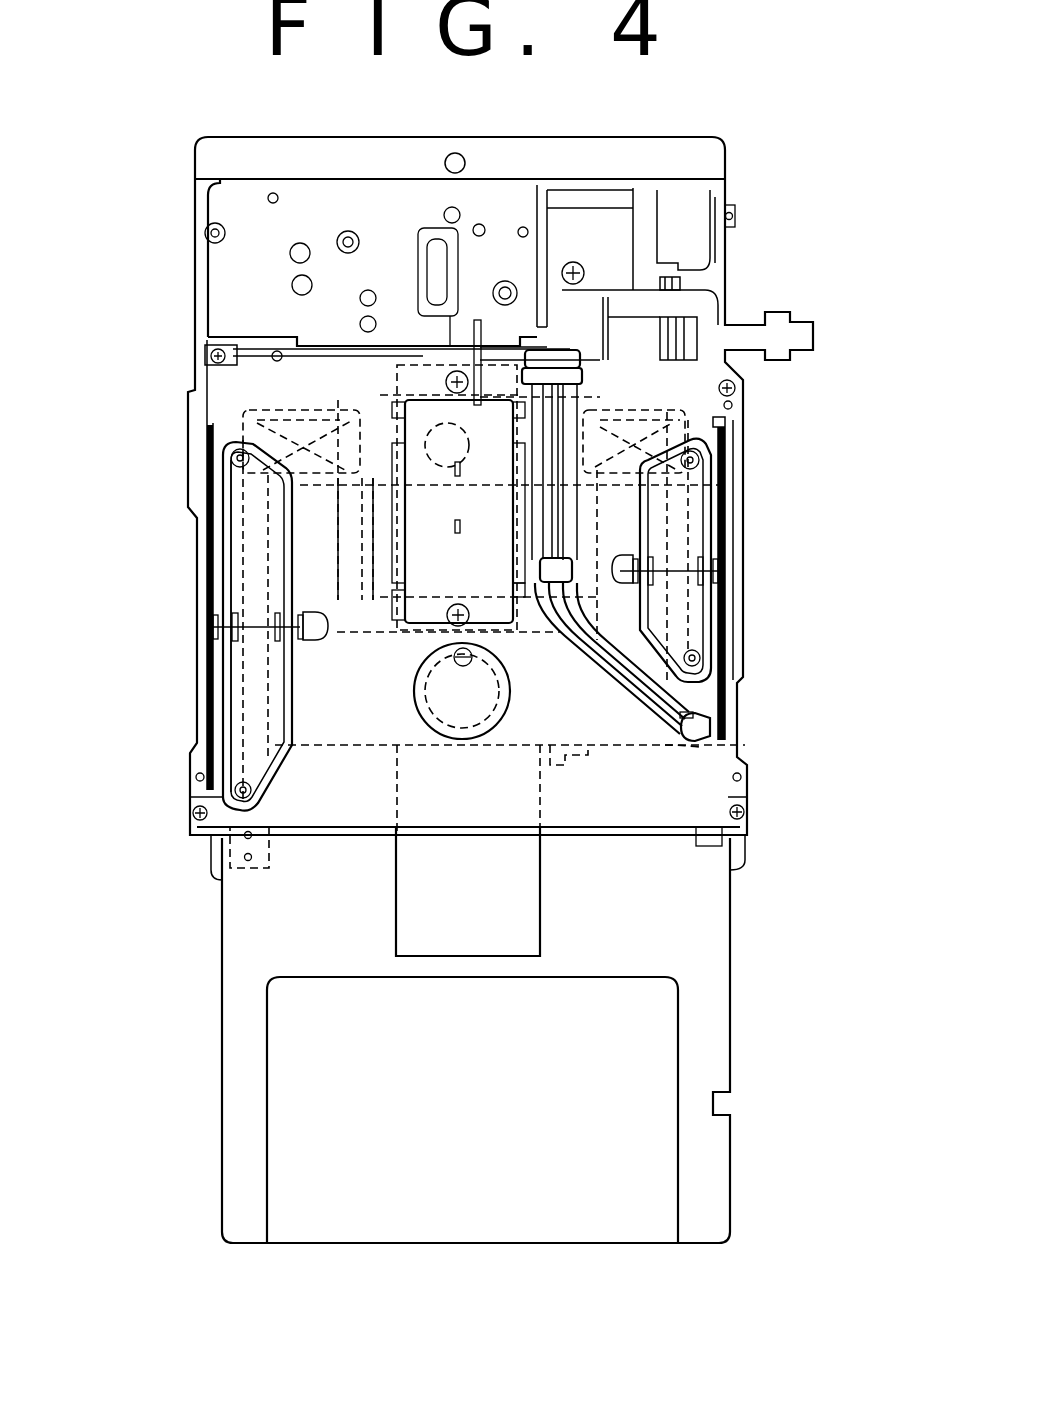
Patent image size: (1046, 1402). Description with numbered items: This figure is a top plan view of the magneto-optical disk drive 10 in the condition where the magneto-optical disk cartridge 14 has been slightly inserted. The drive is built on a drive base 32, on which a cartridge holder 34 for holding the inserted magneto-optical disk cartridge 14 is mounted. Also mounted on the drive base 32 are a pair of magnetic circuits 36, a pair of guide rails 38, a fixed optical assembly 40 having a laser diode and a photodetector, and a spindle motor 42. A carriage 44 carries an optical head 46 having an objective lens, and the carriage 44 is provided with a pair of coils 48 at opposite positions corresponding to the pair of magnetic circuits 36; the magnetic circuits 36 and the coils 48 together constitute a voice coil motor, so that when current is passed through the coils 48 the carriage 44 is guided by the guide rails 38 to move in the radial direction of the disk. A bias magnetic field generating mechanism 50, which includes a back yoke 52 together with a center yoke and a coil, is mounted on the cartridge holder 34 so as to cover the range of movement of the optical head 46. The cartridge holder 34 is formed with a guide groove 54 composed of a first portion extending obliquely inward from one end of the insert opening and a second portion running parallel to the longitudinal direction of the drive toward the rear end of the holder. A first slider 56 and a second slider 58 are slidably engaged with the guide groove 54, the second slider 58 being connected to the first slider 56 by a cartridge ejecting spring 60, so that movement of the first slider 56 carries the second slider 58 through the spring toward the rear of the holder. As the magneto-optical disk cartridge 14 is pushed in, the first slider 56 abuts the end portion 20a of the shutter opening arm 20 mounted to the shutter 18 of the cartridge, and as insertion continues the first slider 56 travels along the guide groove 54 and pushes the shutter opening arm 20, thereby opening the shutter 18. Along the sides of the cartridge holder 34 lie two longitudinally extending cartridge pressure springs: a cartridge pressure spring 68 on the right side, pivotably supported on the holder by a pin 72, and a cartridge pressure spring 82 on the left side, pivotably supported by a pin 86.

The magneto-optical disk drive 10 is at (755, 465).
The magneto-optical disk cartridge 14 is at (485, 1190).
The shutter 18 is at (418, 907).
The shutter opening arm 20 is at (590, 753).
The end portion of the shutter opening arm 20a is at (678, 747).
The drive base 32 is at (195, 277).
The cartridge holder 34 is at (220, 685).
The magnetic circuits 36 is at (300, 510).
The guide rails 38 is at (373, 603).
The fixed optical assembly 40 is at (268, 223).
The spindle motor 42 is at (464, 723).
The carriage 44 is at (368, 440).
The optical head 46 is at (442, 455).
The coils 48 is at (258, 437).
The bias magnetic field generating mechanism 50 is at (428, 608).
The back yoke 52 is at (413, 556).
The guide groove 54 is at (607, 657).
The first slider 56 is at (710, 728).
The second slider 58 is at (545, 570).
The cartridge ejecting spring 60 is at (680, 717).
The cartridge pressure spring 68 is at (705, 535).
The pin 72 is at (680, 572).
The cartridge pressure spring 82 is at (233, 554).
The pin 86 is at (258, 620).